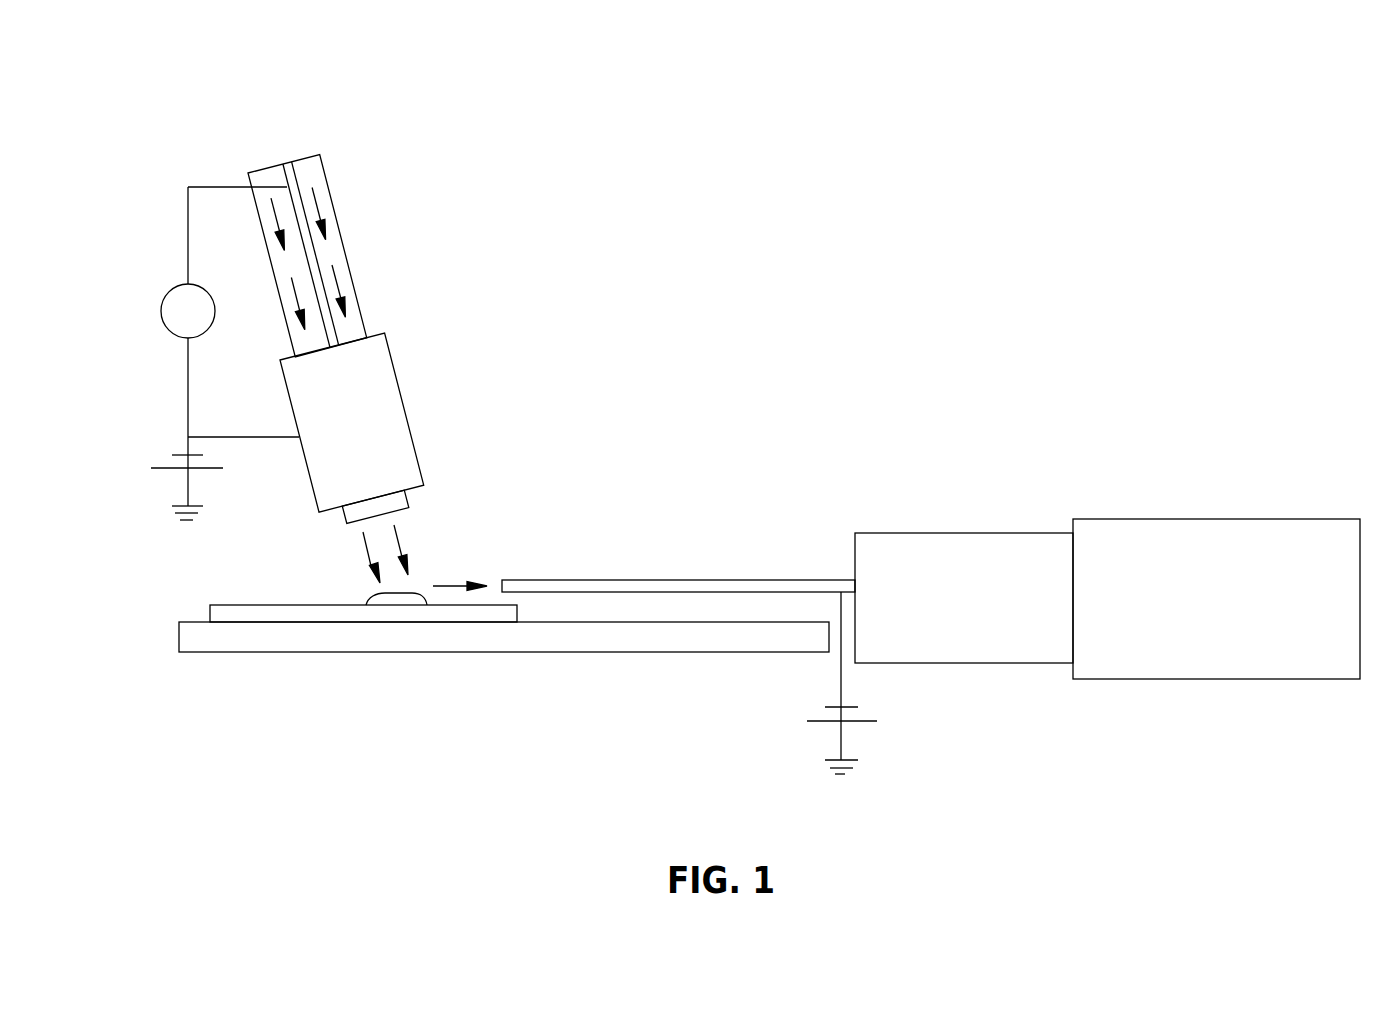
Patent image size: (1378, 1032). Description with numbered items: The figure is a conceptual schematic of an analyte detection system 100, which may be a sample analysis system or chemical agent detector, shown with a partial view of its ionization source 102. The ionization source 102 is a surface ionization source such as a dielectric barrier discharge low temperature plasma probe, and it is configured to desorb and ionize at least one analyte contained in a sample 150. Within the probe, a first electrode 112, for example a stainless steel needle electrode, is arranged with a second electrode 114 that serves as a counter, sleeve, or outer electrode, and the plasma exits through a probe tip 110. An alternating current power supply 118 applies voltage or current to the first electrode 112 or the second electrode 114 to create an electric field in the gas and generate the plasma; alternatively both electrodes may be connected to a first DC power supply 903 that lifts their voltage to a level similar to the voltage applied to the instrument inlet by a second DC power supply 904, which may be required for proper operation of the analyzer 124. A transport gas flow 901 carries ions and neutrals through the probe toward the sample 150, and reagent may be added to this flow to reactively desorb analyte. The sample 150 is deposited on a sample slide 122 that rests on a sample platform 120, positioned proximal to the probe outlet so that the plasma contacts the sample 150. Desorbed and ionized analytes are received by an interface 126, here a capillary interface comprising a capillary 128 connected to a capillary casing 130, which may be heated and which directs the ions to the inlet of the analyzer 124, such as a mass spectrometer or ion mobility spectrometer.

The analyte detection system 100 is at (160, 93).
The ionization source 102 is at (387, 202).
The probe tip 110 is at (402, 517).
The first electrode 112 is at (283, 170).
The second electrode 114 is at (408, 402).
The alternating current power supply 118 is at (160, 311).
The sample platform 120 is at (287, 652).
The sample slide 122 is at (208, 613).
The analyzer 124 is at (1217, 519).
The interface 126 is at (812, 517).
The capillary 128 is at (677, 581).
The capillary casing 130 is at (965, 533).
The sample material 150 is at (350, 595).
The transport gas flow 901 is at (338, 277).
The first DC power supply 903 is at (160, 487).
The second DC power supply 904 is at (876, 735).